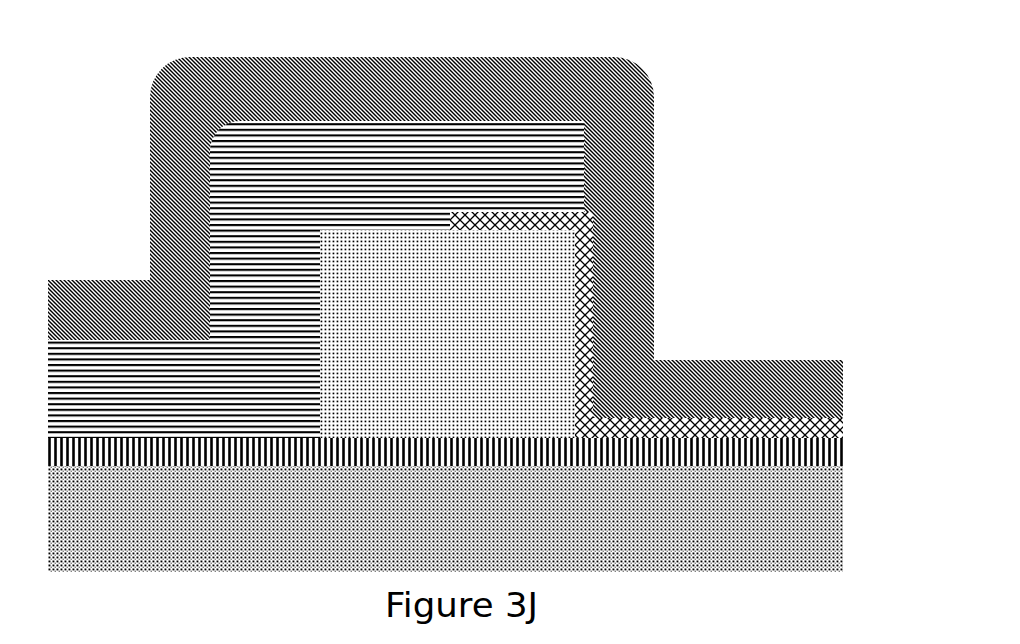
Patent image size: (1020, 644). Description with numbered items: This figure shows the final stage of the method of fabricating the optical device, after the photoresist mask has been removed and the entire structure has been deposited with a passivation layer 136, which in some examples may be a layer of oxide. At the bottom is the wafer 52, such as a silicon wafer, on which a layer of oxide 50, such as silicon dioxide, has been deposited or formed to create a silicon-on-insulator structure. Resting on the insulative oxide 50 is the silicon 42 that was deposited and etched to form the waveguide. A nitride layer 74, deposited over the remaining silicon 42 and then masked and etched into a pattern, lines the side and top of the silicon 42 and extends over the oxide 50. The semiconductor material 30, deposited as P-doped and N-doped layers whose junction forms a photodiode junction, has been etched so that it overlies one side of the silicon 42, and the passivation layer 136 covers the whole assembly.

The passivation layer 136 is at (638, 96).
The semiconductor material 30 is at (568, 185).
The nitride layer 74 is at (580, 278).
The silicon 42 is at (464, 340).
The oxide layer 50 is at (838, 451).
The wafer 52 is at (838, 511).